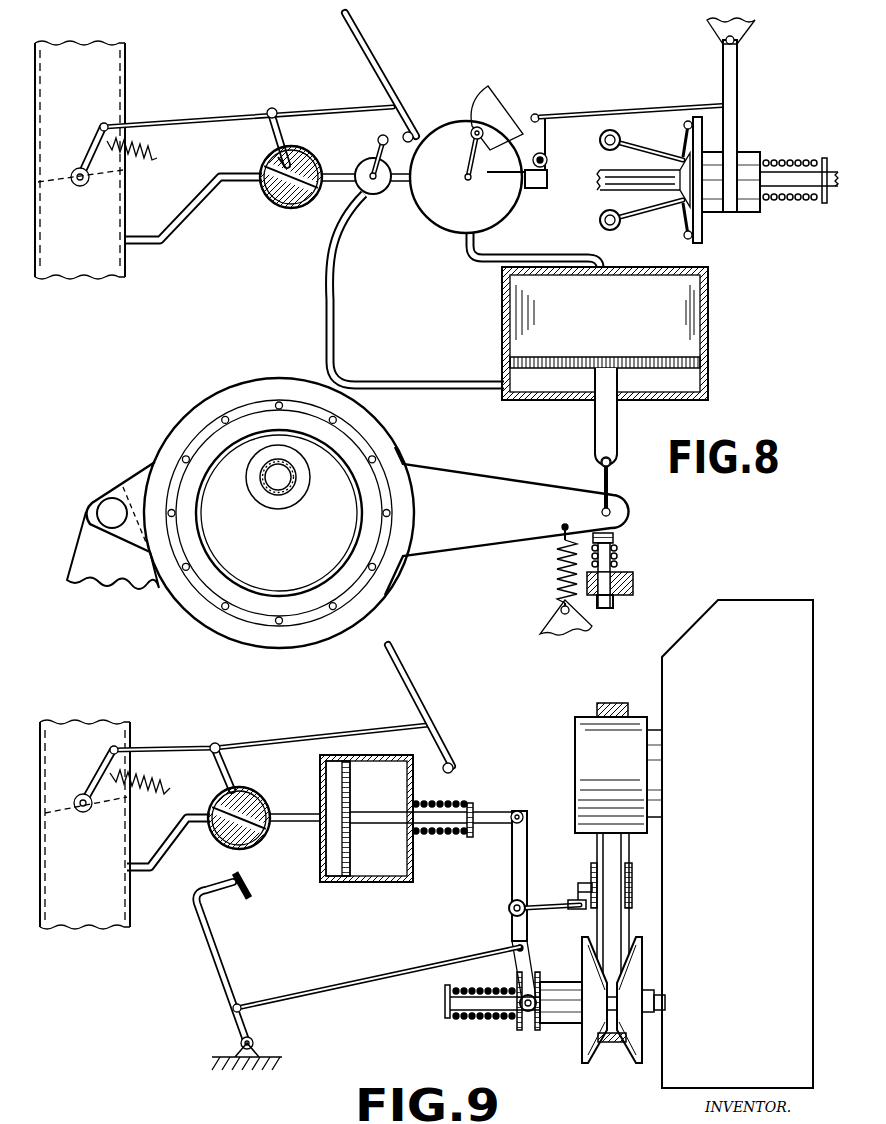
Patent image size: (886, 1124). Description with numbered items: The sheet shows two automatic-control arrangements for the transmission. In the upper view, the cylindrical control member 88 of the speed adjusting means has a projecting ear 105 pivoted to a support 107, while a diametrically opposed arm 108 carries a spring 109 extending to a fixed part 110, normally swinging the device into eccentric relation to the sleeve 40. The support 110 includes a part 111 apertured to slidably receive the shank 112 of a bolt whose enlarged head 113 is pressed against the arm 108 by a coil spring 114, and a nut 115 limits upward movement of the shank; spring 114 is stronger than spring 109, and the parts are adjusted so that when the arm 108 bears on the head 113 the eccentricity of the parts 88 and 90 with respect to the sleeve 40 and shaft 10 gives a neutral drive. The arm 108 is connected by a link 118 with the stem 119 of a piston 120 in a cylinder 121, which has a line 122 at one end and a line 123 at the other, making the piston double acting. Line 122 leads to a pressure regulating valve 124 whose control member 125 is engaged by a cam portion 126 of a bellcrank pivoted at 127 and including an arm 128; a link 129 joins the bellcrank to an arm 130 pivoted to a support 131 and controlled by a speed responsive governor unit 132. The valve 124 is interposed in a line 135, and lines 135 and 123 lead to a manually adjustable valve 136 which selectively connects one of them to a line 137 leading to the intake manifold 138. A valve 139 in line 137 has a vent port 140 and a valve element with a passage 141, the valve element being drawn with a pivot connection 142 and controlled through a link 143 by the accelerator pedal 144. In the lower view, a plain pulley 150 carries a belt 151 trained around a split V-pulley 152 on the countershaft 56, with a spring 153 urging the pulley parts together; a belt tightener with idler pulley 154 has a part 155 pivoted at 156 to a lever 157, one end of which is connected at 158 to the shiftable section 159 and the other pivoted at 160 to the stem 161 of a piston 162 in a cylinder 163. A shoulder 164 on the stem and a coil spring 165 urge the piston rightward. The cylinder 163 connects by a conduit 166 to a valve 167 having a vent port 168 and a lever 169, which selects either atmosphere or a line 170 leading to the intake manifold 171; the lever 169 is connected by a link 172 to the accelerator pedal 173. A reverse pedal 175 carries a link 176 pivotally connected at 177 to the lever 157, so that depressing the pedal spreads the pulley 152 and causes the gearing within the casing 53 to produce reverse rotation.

In FIG. 8, the shaft 10 is at (273, 486).
In FIG. 8, the sleeve 40 is at (287, 495).
In FIG. 9, the casing 53 is at (770, 612).
In FIG. 9, the countershaft 56 is at (658, 999).
In FIG. 8, the cylindrical control member 88 is at (243, 392).
In FIG. 8, the adjusting part 90 is at (297, 416).
In FIG. 8, the projecting ear 105 is at (141, 482).
In FIG. 8, the support 107 is at (108, 503).
In FIG. 8, the projection or arm 108 is at (448, 482).
In FIG. 8, the spring 109 is at (558, 572).
In FIG. 8, the fixed part 110 is at (563, 622).
In FIG. 8, the apertured part 111 is at (634, 577).
In FIG. 8, the shank 112 is at (622, 560).
In FIG. 8, the enlarged head 113 is at (616, 535).
In FIG. 8, the coil spring 114 is at (620, 547).
In FIG. 8, the nut 115 is at (618, 600).
In FIG. 8, the link 118 is at (611, 488).
In FIG. 8, the stem 119 is at (609, 428).
In FIG. 8, the piston 120 is at (628, 357).
In FIG. 8, the cylinder 121 is at (709, 322).
In FIG. 8, the line 122 is at (568, 255).
In FIG. 8, the line 123 is at (428, 384).
In FIG. 8, the pressure regulating valve 124 is at (452, 128).
In FIG. 8, the shiftable adjustment or control member 125 is at (480, 125).
In FIG. 8, the cam portion 126 is at (503, 123).
In FIG. 8, the pivot 127 is at (547, 175).
In FIG. 8, the arm 128 is at (546, 128).
In FIG. 8, the link 129 is at (606, 113).
In FIG. 8, the arm 130 is at (738, 78).
In FIG. 8, the support 131 is at (742, 30).
In FIG. 8, the speed responsive governor unit 132 is at (710, 220).
In FIG. 8, the line 135 is at (404, 182).
In FIG. 8, the valve 136 is at (376, 195).
In FIG. 8, the line 137 is at (182, 213).
In FIG. 8, the intake manifold 138 is at (95, 266).
In FIG. 8, the valve 139 is at (295, 193).
In FIG. 8, the vent port 140 is at (283, 160).
In FIG. 8, the passage 141 is at (308, 160).
In FIG. 8, the pivot 142 is at (283, 112).
In FIG. 8, the link 143 is at (336, 108).
In FIG. 8, the accelerator pedal 144 is at (373, 50).
In FIG. 9, the plain pulley 150 is at (580, 736).
In FIG. 9, the belt 151 is at (613, 702).
In FIG. 9, the split V-pulley 152 is at (622, 1052).
In FIG. 9, the spring 153 is at (486, 1018).
In FIG. 9, the idler pulley 154 is at (636, 884).
In FIG. 9, the part 155 is at (575, 899).
In FIG. 9, the pivot 156 is at (510, 908).
In FIG. 9, the lever 157 is at (526, 849).
In FIG. 9, the connection 158 is at (527, 1012).
In FIG. 9, the shiftable section 159 is at (588, 1043).
In FIG. 9, the pivot 160 is at (526, 812).
In FIG. 9, the stem 161 is at (496, 815).
In FIG. 9, the piston 162 is at (352, 850).
In FIG. 9, the cylinder 163 is at (374, 883).
In FIG. 9, the shoulder 164 is at (471, 802).
In FIG. 9, the coil spring 165 is at (447, 834).
In FIG. 9, the conduit 166 is at (289, 812).
In FIG. 9, the valve 167 is at (252, 848).
In FIG. 9, the vent port 168 is at (245, 816).
In FIG. 9, the lever 169 is at (233, 766).
In FIG. 9, the line 170 is at (168, 843).
In FIG. 9, the intake manifold 171 is at (95, 928).
In FIG. 9, the link 172 is at (318, 733).
In FIG. 9, the accelerator pedal 173 is at (416, 683).
In FIG. 9, the pedal 175 is at (225, 968).
In FIG. 9, the link 176 is at (322, 968).
In FIG. 9, the pivotal connection 177 is at (523, 948).